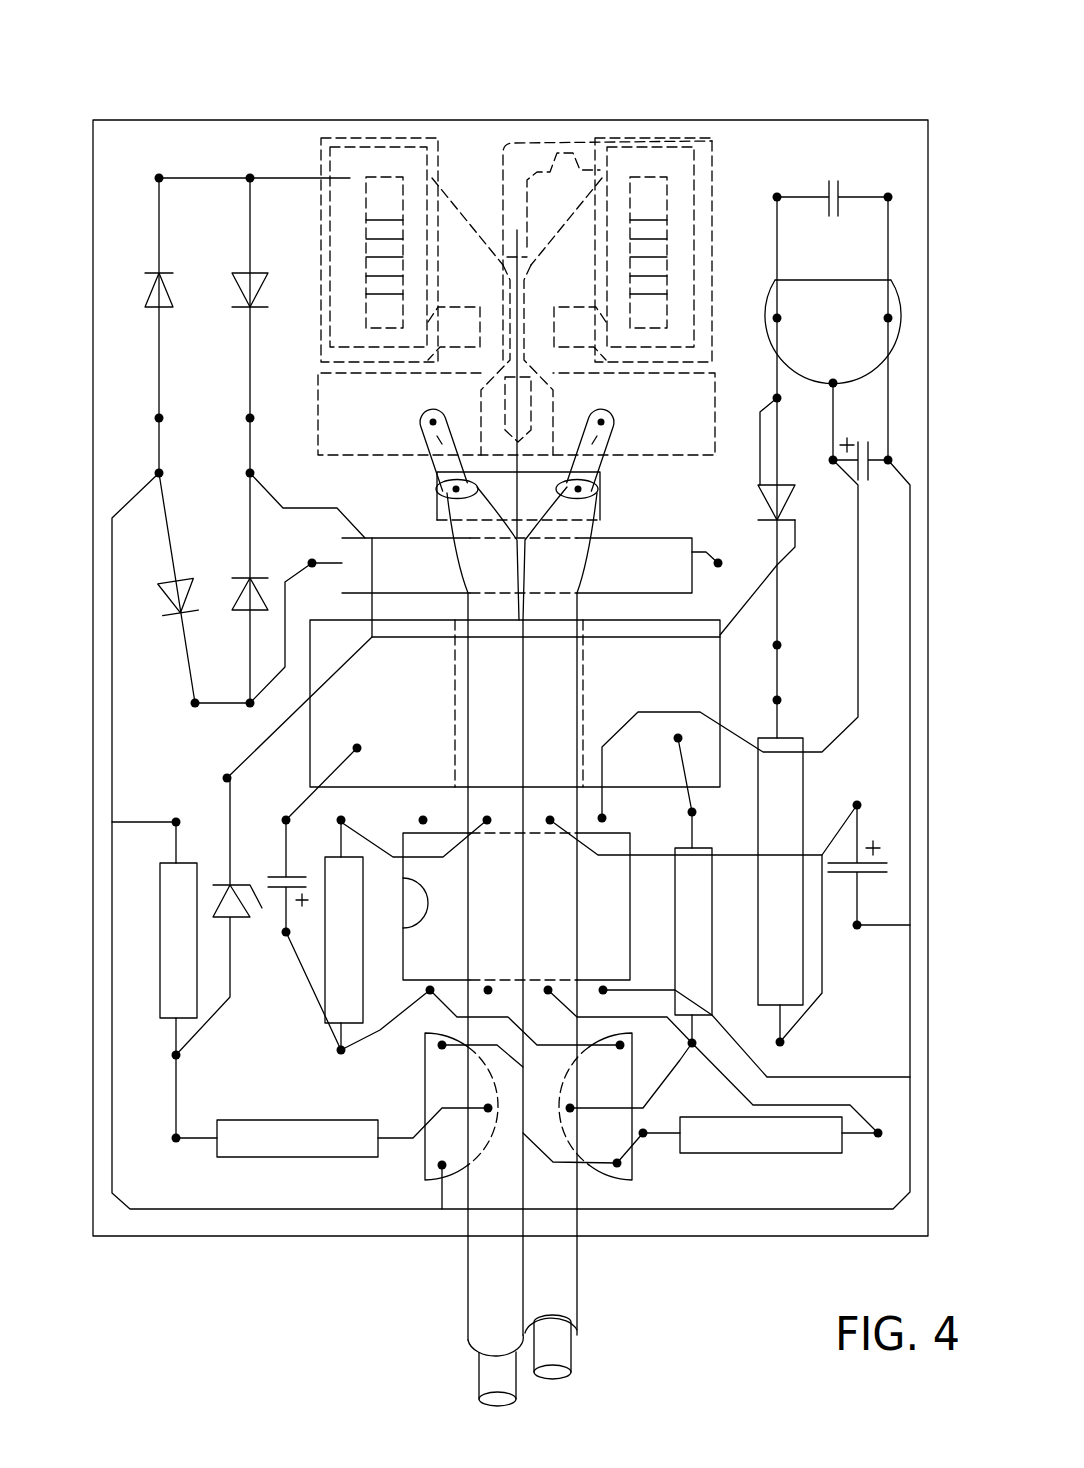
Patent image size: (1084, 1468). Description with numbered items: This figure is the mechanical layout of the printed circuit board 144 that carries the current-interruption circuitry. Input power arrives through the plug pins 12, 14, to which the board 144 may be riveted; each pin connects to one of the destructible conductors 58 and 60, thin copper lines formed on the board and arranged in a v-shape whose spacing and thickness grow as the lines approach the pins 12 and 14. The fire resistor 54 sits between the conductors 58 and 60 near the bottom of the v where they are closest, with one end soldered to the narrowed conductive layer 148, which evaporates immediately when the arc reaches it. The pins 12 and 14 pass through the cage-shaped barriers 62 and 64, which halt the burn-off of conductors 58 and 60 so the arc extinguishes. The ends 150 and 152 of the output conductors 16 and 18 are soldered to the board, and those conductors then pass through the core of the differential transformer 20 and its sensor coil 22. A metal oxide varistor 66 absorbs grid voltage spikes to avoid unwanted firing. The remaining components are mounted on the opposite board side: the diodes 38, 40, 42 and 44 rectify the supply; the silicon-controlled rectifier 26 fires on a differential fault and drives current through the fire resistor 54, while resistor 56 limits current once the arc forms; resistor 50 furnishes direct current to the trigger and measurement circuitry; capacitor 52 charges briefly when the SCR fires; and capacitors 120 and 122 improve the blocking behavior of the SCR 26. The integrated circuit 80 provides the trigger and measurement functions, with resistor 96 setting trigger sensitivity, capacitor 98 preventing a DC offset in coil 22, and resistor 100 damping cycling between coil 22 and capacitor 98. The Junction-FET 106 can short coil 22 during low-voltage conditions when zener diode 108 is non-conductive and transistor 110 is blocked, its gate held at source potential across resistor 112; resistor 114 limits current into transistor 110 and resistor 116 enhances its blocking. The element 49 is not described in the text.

The plug pin 12 is at (648, 198).
The plug pin 14 is at (339, 198).
The conductor 16 is at (564, 933).
The conductor 18 is at (481, 946).
The differential transformer 20 is at (515, 703).
The sensor coil 22 is at (515, 703).
The silicon-controlled rectifier 26 is at (833, 334).
The diode 38 is at (241, 613).
The diode 40 is at (237, 277).
The diode 42 is at (164, 603).
The diode 44 is at (145, 277).
The diode 49 is at (772, 516).
The resistor 50 is at (798, 873).
The capacitor 52 is at (869, 882).
The fire resistor 54 is at (470, 302).
The resistor 56 is at (517, 565).
The destructible conductor 58 is at (566, 231).
The destructible conductor 60 is at (467, 231).
The barrier 62 is at (697, 213).
The barrier 64 is at (312, 215).
The metal oxide varistor 66 is at (557, 501).
The integrated circuit 80 is at (516, 906).
The resistor 96 is at (331, 938).
The capacitor 98 is at (300, 936).
The resistor 100 is at (708, 924).
The Junction-FET 106 is at (619, 1106).
The zener diode 108 is at (224, 916).
The transistor 110 is at (521, 1121).
The resistor 112 is at (781, 1153).
The resistor 114 is at (352, 1148).
The resistor 116 is at (154, 921).
The capacitor 120 is at (865, 445).
The capacitor 122 is at (833, 320).
The printed circuit board 144 is at (510, 650).
The conductive layer 148 is at (607, 214).
The end of conductor 150 is at (623, 453).
The end of conductor 152 is at (409, 453).